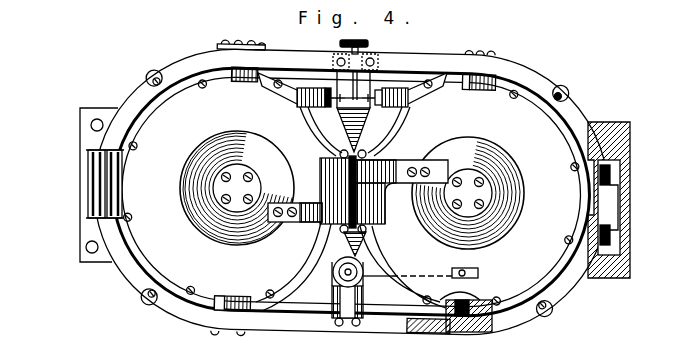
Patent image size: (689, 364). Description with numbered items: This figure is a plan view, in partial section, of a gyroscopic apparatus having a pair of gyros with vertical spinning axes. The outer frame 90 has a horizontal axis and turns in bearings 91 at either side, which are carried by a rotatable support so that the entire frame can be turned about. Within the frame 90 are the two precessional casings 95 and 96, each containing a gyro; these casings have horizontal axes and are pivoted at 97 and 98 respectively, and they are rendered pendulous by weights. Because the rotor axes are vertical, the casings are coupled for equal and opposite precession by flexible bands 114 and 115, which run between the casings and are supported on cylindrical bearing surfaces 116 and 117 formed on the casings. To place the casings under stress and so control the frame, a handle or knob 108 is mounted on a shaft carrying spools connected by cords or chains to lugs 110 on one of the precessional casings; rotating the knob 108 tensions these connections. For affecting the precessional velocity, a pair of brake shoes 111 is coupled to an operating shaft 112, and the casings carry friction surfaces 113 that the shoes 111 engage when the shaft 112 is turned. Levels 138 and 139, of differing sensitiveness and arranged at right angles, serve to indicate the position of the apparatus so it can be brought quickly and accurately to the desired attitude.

The outer frame 90 is at (540, 83).
The bearings 91 is at (82, 203).
The precessional casing 95 is at (237, 182).
The precessional casing 96 is at (480, 192).
The pivot 97 is at (232, 64).
The pivot 98 is at (478, 72).
The handle or knob 108 is at (336, 283).
The lugs 110 is at (478, 273).
The brake shoes 111 is at (380, 110).
The operating shaft 112 is at (358, 80).
The friction surfaces 113 is at (312, 90).
The flexible band 114 is at (393, 175).
The flexible band 115 is at (311, 213).
The cylindrical bearing surface 116 is at (378, 228).
The cylindrical bearing surface 117 is at (336, 163).
The level 138 is at (118, 175).
The level 139 is at (98, 190).